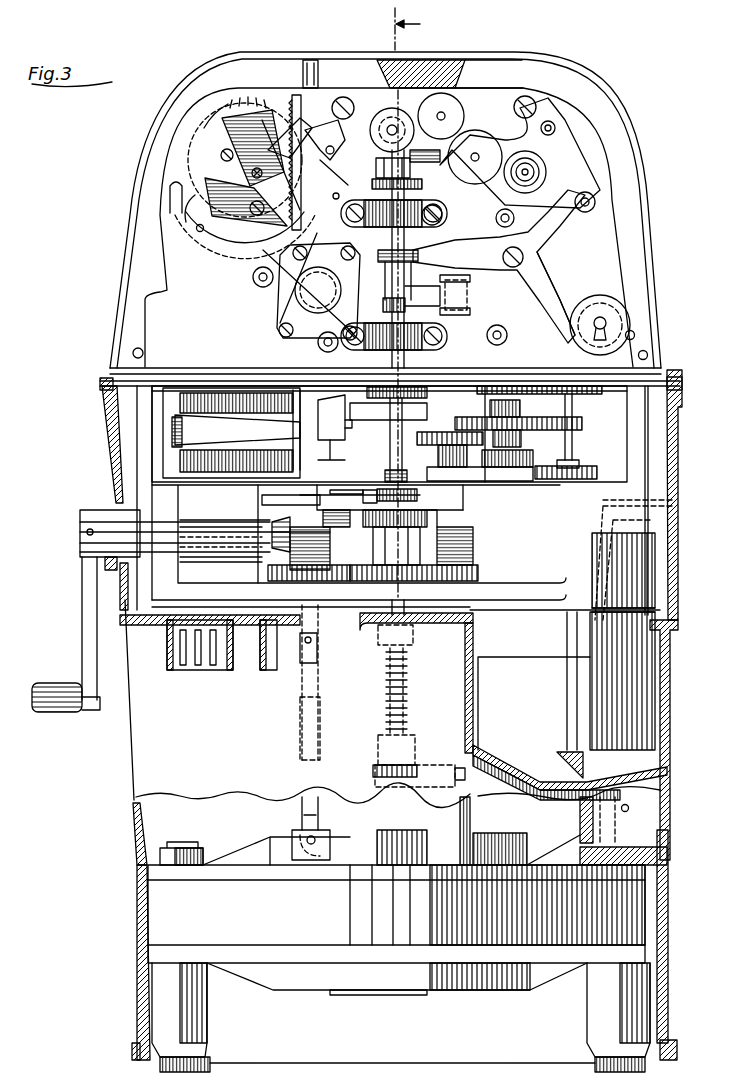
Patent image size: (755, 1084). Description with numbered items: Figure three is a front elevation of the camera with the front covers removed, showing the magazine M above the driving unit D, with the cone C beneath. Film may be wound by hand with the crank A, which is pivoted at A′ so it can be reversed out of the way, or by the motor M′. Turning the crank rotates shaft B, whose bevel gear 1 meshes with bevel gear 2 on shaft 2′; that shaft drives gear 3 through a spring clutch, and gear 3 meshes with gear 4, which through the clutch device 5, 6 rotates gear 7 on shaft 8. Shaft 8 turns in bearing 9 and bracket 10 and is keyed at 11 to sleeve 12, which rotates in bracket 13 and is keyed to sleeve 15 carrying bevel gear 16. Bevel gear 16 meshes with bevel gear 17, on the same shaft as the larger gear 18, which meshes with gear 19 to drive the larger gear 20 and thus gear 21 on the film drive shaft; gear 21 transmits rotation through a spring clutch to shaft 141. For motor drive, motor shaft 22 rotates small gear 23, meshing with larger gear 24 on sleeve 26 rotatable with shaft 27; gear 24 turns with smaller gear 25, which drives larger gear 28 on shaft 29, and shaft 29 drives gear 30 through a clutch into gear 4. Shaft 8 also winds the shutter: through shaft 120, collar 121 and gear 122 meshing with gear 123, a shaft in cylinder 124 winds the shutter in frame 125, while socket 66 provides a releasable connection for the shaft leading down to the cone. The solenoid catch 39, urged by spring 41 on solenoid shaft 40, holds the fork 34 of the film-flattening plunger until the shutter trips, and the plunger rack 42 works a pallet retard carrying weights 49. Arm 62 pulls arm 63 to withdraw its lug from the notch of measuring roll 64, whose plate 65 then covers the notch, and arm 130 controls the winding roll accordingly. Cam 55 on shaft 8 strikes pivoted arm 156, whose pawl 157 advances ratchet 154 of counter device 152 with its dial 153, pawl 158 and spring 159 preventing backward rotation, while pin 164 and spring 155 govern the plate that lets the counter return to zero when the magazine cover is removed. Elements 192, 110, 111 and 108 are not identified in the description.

The magazine M is at (612, 85).
The bevel gear 17 is at (381, 102).
The bracket 13 is at (405, 683).
The pin 164 is at (316, 60).
The counter device 152 is at (245, 178).
The dial 153 is at (253, 97).
The spring 155 is at (199, 231).
The pawl 157 is at (296, 95).
The ratchet 154 is at (291, 164).
The pivoted arm 156 is at (326, 159).
The larger gear 18 is at (441, 108).
The gear 19 is at (475, 133).
The larger gear 20 is at (526, 162).
The gear 21 is at (528, 176).
The shaft 141 is at (535, 168).
The bevel gear 16 is at (424, 160).
The sleeve 15 is at (392, 172).
The cam 55 is at (422, 188).
The bracket 10 is at (425, 347).
The sleeve 12 is at (398, 275).
The key 11 is at (400, 307).
The arm 130 is at (542, 241).
The arm 62 is at (458, 253).
The arm 63 is at (538, 287).
The measuring roll 64 is at (598, 295).
The plate 65 is at (608, 339).
The rack 42 is at (360, 313).
The weights 49 is at (253, 279).
The pawl 158 is at (290, 259).
The plate 159 is at (276, 307).
The solenoid shaft 40 is at (317, 396).
The spring 41 is at (287, 396).
The solenoid catch 39 is at (359, 396).
The shaft 27 is at (498, 388).
The larger gear 24 is at (553, 388).
The driving unit D is at (125, 433).
The motor armature 192 is at (231, 433).
The bearing 9 is at (415, 394).
The fork 34 is at (370, 453).
The shaft 8 is at (403, 463).
The larger gear 28 is at (428, 432).
The sleeve 26 is at (490, 410).
The small gear 23 is at (572, 424).
The smaller gear 25 is at (522, 439).
The motor shaft 22 is at (574, 438).
The shaft B is at (265, 531).
The pivot A′ is at (90, 533).
The bevel gear 2 is at (280, 517).
The shaft 2′ is at (290, 501).
The bevel gear 1 is at (278, 543).
The gear 3 is at (268, 572).
The gear 30 is at (480, 574).
The shaft 110 is at (363, 497).
The pinion 111 is at (415, 498).
The shaft 108 is at (440, 501).
The gear 7 is at (428, 523).
The clutch device 6 is at (372, 538).
The clutch device 5 is at (376, 557).
The gear 4 is at (424, 565).
The rotary shaft 29 is at (463, 524).
The motor M′ is at (571, 650).
The cone C is at (162, 761).
The socket 66 is at (384, 635).
The shaft 120 is at (404, 707).
The collar 121 is at (412, 747).
The gear 122 is at (416, 767).
The gear 123 is at (480, 752).
The cylinder 124 is at (473, 821).
The frame 125 is at (502, 841).
The crank A is at (88, 649).